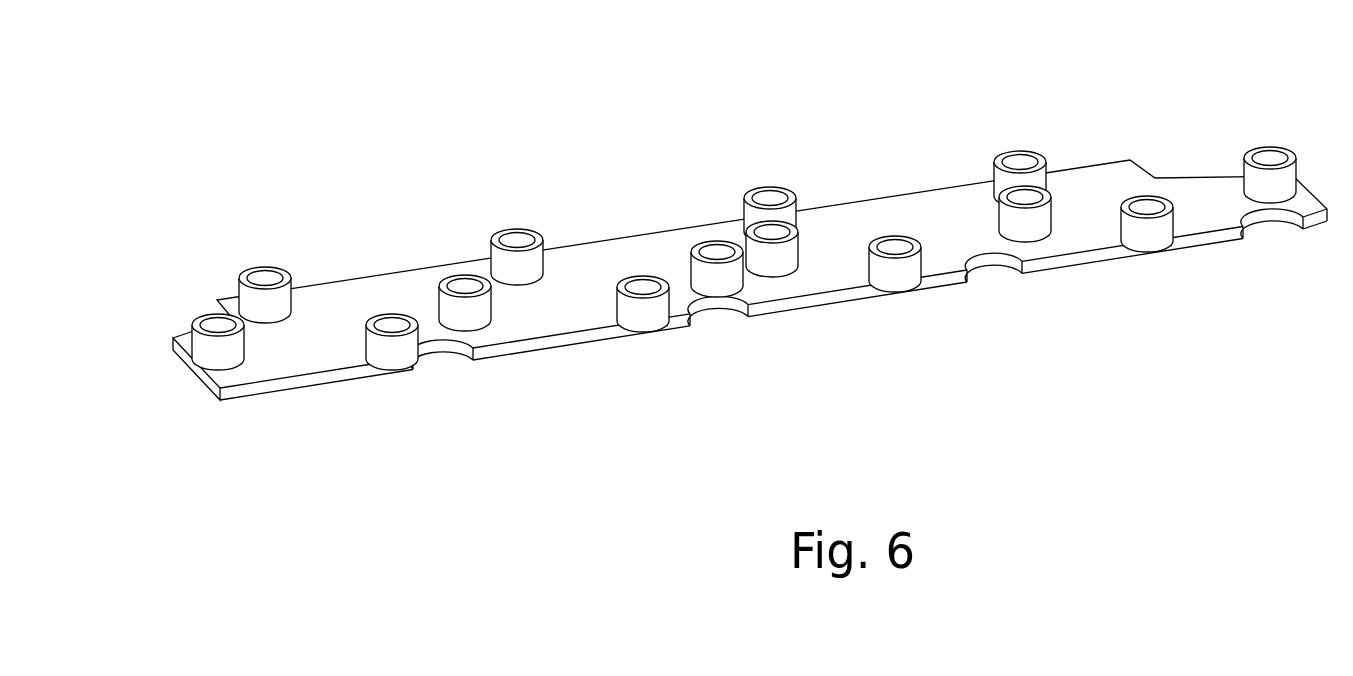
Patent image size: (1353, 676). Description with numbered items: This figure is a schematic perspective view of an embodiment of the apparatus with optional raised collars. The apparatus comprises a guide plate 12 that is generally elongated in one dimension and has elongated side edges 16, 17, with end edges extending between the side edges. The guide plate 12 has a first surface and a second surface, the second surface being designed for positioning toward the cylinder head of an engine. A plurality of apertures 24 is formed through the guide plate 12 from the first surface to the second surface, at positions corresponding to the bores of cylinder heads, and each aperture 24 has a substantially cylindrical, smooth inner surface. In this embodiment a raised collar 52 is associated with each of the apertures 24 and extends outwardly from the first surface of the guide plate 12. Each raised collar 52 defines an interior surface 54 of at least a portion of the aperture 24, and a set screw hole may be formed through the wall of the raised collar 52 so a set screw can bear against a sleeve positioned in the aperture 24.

The guide plate 12 is at (750, 335).
The elongated side edge 16 is at (388, 240).
The elongated side edge 17 is at (250, 400).
The aperture 24 is at (267, 253).
The raised collar 52 is at (537, 200).
The interior surface 54 is at (765, 168).